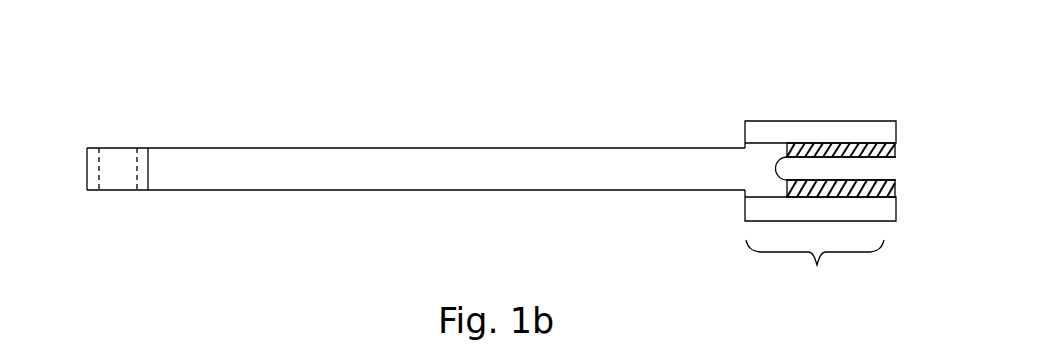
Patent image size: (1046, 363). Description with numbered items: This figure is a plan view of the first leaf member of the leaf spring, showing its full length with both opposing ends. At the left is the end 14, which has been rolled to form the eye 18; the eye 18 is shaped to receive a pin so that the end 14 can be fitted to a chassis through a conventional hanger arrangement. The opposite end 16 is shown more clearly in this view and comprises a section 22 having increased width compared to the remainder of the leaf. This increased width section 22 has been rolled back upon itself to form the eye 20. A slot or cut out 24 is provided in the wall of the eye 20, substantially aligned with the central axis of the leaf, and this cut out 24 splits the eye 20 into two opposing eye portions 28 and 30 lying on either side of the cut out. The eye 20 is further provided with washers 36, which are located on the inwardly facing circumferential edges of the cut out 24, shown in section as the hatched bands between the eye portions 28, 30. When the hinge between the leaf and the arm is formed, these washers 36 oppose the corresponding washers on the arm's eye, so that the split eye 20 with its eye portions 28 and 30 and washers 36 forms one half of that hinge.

The end 14 is at (85, 162).
The eye 18 is at (128, 143).
The eye 20 is at (801, 158).
The eye portion 28 is at (779, 128).
The eye portion 30 is at (762, 208).
The washer 36 is at (852, 147).
The end 16 is at (892, 170).
The slot or cut out 24 is at (894, 178).
The increased width section 22 is at (815, 277).